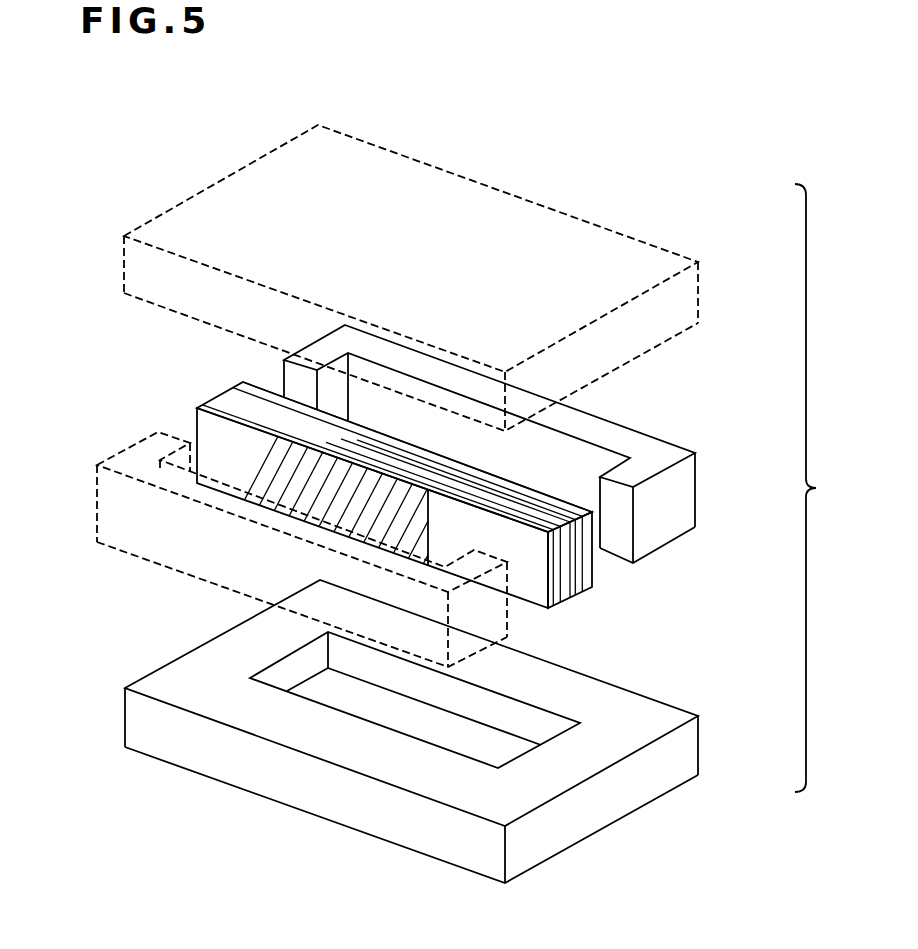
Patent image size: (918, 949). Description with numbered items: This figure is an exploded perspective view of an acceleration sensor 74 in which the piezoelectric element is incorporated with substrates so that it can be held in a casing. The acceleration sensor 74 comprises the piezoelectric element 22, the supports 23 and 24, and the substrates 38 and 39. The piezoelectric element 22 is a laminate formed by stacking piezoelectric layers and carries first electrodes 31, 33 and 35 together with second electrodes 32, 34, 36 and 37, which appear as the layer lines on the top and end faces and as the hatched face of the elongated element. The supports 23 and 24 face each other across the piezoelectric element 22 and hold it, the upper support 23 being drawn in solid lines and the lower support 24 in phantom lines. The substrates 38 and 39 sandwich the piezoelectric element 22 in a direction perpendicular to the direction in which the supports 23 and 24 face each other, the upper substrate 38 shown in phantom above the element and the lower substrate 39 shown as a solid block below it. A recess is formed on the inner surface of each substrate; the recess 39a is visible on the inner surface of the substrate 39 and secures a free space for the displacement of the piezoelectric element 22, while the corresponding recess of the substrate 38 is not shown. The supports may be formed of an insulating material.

The piezoelectric element 22 is at (437, 478).
The support 23 is at (670, 442).
The support 24 is at (110, 548).
The first electrode 31 is at (528, 481).
The second electrode 32 is at (242, 382).
The first electrode 33 is at (585, 497).
The second electrode 34 is at (197, 404).
The first electrode 35 is at (549, 531).
The second electrode 36 is at (477, 463).
The second electrode 37 is at (252, 467).
The substrate 38 is at (628, 236).
The substrate 39 is at (411, 753).
The recess 39a is at (423, 730).
The acceleration sensor 74 is at (824, 488).